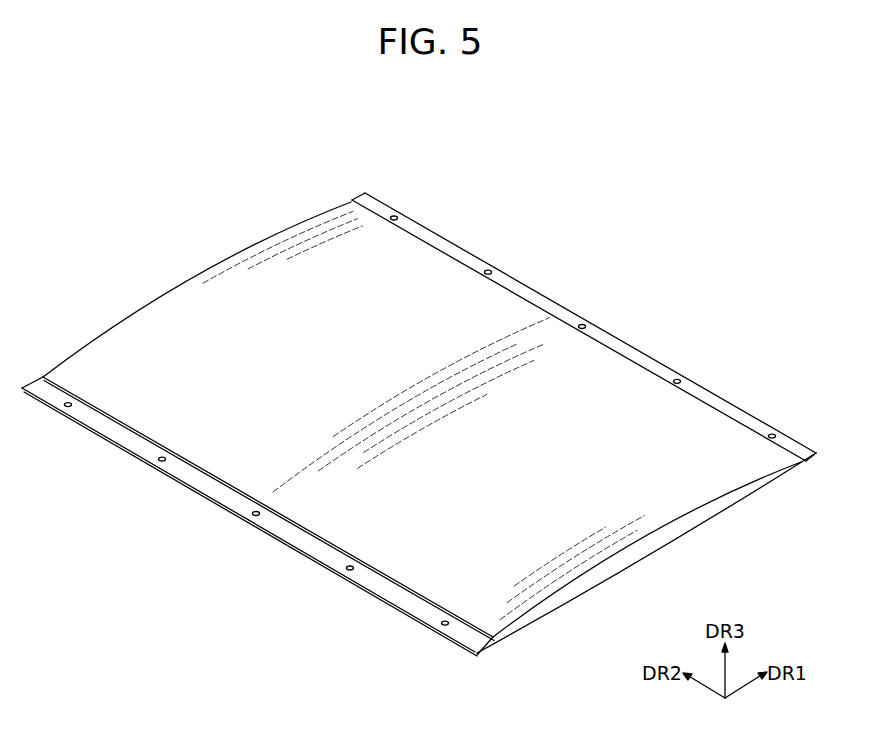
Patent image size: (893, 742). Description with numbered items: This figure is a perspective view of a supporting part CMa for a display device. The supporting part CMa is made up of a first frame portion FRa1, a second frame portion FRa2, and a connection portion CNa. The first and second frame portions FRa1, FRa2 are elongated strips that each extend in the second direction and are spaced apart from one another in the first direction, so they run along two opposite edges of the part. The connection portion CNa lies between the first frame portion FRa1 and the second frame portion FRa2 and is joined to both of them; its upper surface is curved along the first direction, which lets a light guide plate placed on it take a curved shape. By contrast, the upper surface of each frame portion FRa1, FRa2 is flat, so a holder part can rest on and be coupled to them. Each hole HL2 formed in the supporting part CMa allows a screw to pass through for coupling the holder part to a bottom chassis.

The supporting part CMa is at (419, 401).
The connection portion CNa is at (610, 383).
The first frame portion FRa1 is at (412, 602).
The second frame portion FRa2 is at (584, 308).
The hole HL2 is at (394, 216).